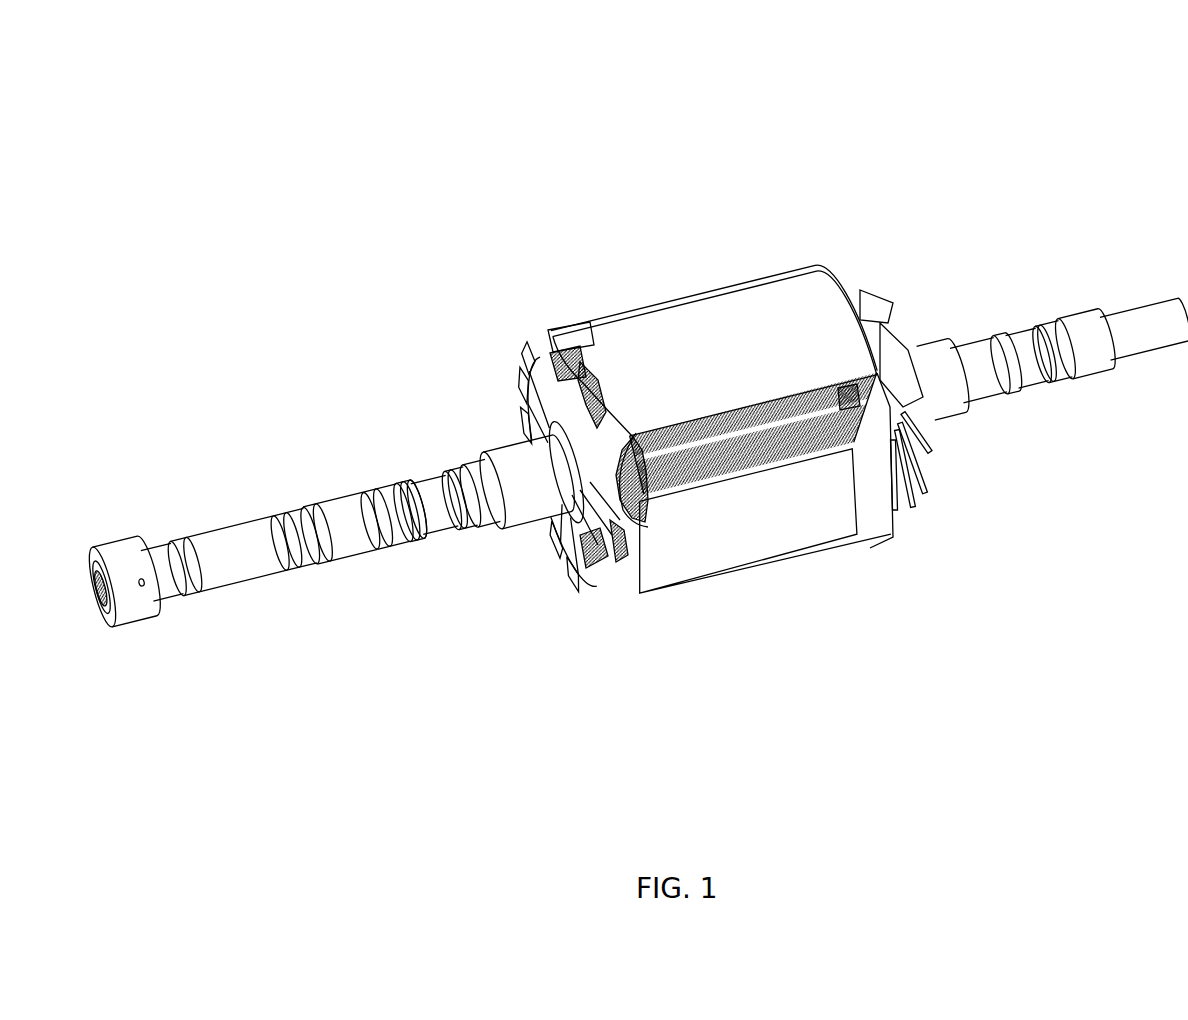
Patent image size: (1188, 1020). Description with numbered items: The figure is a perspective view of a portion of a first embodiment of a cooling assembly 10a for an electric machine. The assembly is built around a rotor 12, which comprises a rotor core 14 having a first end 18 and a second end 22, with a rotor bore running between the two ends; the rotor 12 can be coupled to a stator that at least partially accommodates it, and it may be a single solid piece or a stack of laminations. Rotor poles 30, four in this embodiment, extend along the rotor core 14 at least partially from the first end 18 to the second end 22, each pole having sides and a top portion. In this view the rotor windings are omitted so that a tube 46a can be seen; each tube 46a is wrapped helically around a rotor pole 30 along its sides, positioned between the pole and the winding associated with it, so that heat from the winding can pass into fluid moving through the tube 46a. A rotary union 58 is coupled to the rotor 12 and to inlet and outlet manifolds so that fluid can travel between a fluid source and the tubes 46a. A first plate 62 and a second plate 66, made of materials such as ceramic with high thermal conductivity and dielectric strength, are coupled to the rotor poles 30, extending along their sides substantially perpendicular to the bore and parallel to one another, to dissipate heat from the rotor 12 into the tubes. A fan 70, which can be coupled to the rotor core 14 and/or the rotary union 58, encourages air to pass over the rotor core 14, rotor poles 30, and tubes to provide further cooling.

The cooling assembly 10a is at (818, 66).
The rotor 12 is at (784, 595).
The rotor core 14 is at (787, 438).
The first end 18 is at (619, 478).
The second end 22 is at (904, 411).
The rotor poles 30 is at (708, 322).
The tube 46a is at (562, 358).
The rotary union 58 is at (88, 583).
The first plate 62 is at (591, 378).
The second plate 66 is at (578, 345).
The fan 70 is at (540, 400).